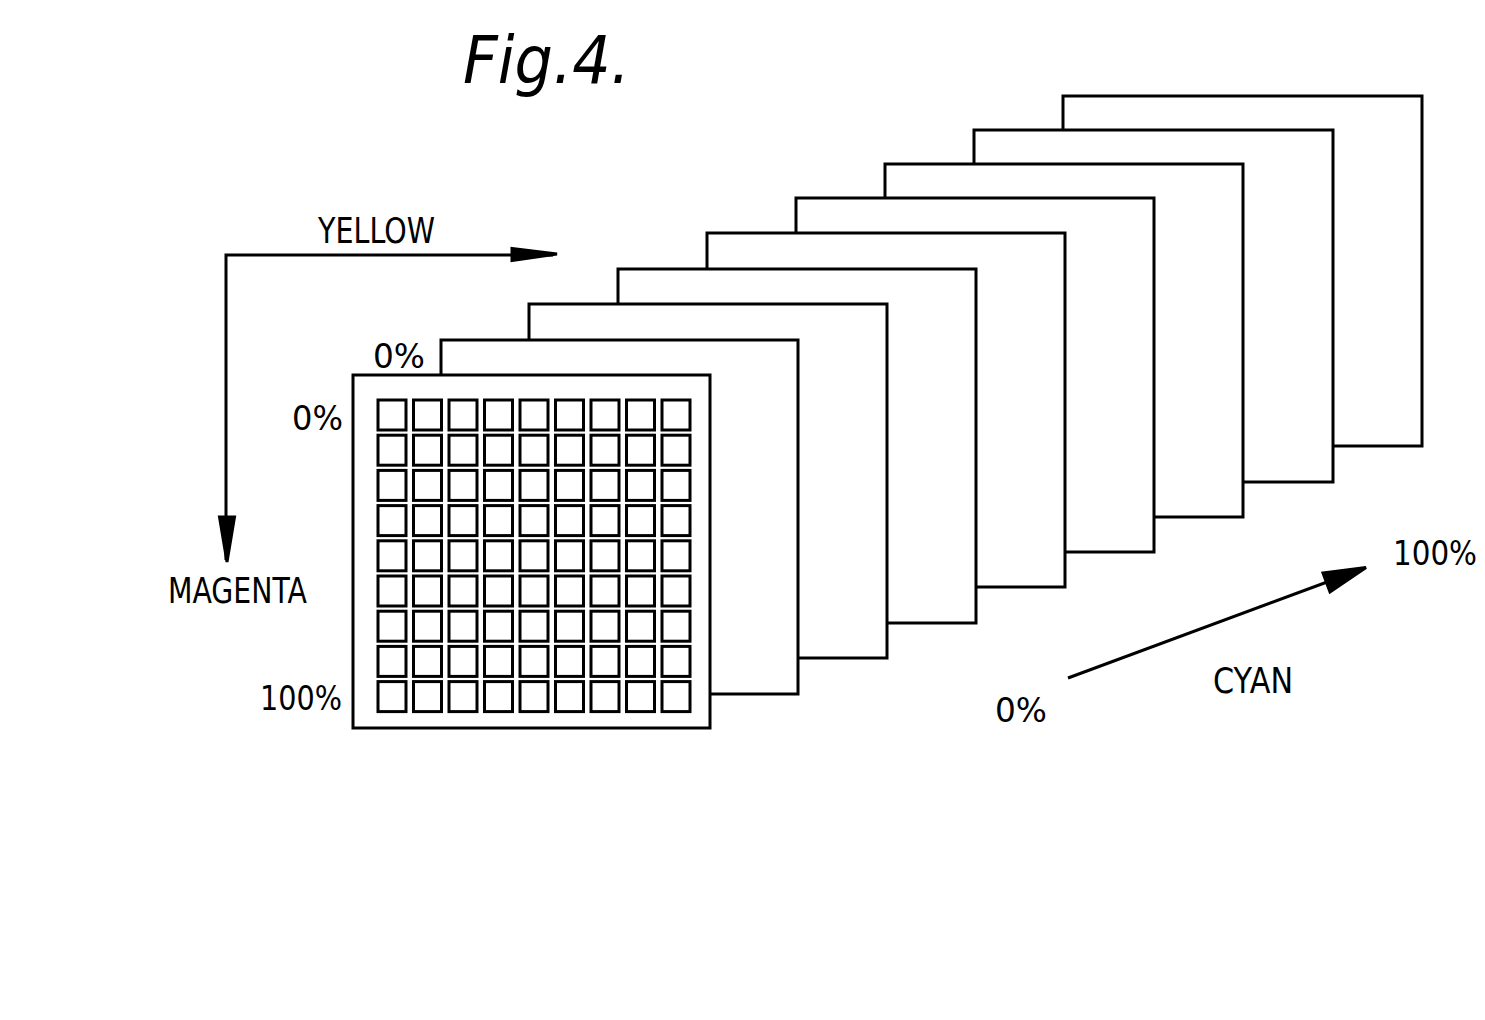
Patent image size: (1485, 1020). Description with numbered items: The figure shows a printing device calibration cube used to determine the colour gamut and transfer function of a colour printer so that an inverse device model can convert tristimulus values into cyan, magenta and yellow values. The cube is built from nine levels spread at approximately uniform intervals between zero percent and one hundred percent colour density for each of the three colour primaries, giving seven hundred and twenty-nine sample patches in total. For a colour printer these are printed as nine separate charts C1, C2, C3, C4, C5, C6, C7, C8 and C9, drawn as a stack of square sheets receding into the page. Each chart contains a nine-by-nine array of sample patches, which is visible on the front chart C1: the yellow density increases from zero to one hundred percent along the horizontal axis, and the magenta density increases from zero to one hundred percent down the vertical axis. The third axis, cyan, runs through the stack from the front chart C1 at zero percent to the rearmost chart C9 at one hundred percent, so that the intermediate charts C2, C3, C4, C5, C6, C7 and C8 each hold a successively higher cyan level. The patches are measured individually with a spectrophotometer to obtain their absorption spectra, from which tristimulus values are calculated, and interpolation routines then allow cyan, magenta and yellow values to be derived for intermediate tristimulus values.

The first colour chart C1 is at (696, 390).
The second colour chart C2 is at (619, 517).
The third colour chart C3 is at (708, 481).
The fourth colour chart C4 is at (797, 446).
The fifth colour chart C5 is at (886, 410).
The sixth colour chart C6 is at (975, 375).
The seventh colour chart C7 is at (1064, 340).
The eighth colour chart C8 is at (1153, 306).
The ninth colour chart C9 is at (1242, 271).